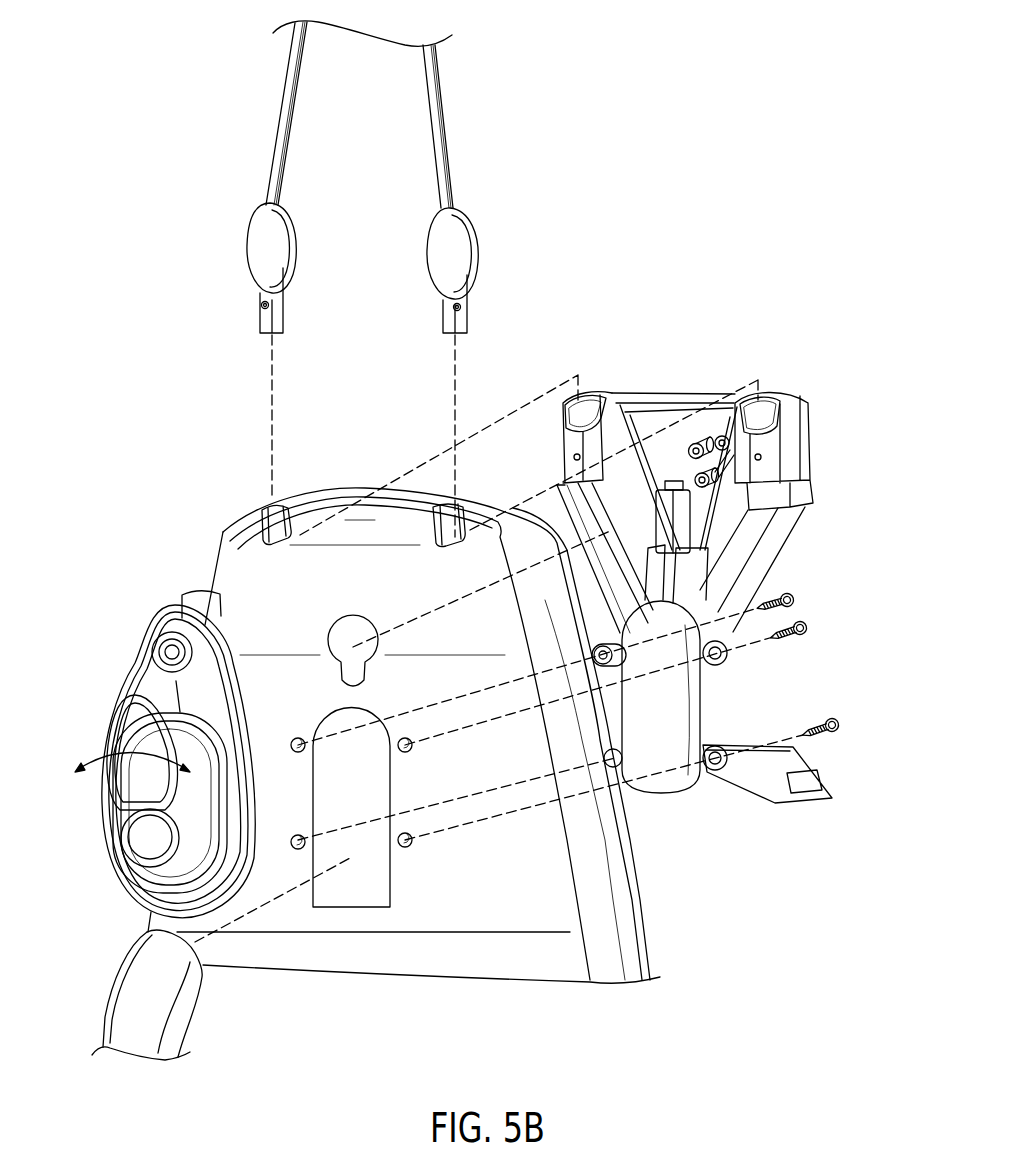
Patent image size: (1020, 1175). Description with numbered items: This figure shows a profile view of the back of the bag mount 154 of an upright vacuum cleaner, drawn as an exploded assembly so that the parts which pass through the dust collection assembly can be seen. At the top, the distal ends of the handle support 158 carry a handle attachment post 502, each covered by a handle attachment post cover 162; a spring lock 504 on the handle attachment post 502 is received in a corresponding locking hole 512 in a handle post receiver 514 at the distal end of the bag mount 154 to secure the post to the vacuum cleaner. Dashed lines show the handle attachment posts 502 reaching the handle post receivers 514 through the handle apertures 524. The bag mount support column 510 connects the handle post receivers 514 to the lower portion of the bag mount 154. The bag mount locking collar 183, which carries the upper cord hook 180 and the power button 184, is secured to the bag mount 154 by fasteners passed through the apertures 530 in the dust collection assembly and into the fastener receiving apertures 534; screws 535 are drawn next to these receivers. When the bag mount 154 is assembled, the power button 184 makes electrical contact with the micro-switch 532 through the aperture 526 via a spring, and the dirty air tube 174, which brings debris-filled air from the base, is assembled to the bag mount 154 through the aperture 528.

The bag mount 154 is at (707, 582).
The handle support 158 is at (290, 106).
The handle attachment post cover 162 is at (280, 238).
The dirty air tube 174 is at (178, 995).
The upper cord hook 180 is at (170, 815).
The bag mount locking collar 183 is at (128, 684).
The power button 184 is at (182, 652).
The handle attachment post 502 is at (280, 305).
The spring lock 504 is at (260, 306).
The bag mount support column 510 is at (600, 560).
The locking hole 512 is at (574, 456).
The handle post receiver 514 is at (576, 393).
The handle aperture 524 is at (272, 525).
The aperture 526 is at (358, 628).
The aperture 528 is at (372, 722).
The apertures 530 is at (410, 836).
The micro-switch 532 is at (700, 523).
The fastener receiving aperture 534 is at (727, 655).
The screw 535 is at (795, 598).